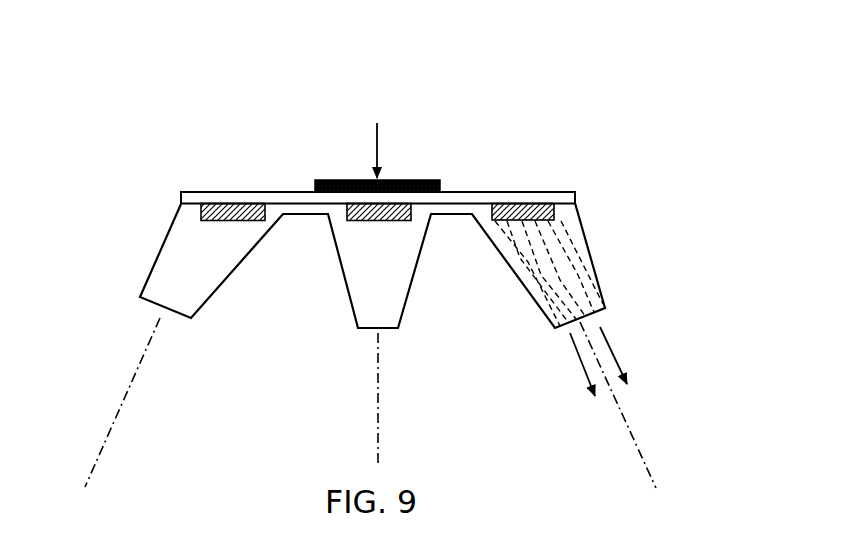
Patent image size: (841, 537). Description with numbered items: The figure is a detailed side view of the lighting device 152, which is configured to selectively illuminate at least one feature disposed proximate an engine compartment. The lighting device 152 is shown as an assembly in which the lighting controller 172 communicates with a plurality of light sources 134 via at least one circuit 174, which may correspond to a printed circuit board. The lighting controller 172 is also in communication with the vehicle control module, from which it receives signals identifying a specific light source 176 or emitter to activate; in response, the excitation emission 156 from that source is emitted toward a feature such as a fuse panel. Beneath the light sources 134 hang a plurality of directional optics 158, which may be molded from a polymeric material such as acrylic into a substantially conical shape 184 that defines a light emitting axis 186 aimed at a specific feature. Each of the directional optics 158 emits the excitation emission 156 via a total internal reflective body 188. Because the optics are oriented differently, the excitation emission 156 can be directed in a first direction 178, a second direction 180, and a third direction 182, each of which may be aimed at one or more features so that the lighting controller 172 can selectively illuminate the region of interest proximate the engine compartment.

The lighting device 152 is at (581, 74).
The light sources 134 is at (217, 205).
The specific light source 176 is at (535, 204).
The lighting controller 172 is at (340, 180).
The circuit 174 is at (470, 198).
The directional optics 158 is at (157, 265).
The total internal reflective body 188 is at (212, 255).
The substantially conical shape 184 is at (217, 294).
The third direction 182 is at (152, 313).
The second direction 180 is at (388, 333).
The first direction 178 is at (616, 331).
The excitation emission 156 is at (607, 345).
The light emitting axis 186 is at (127, 400).